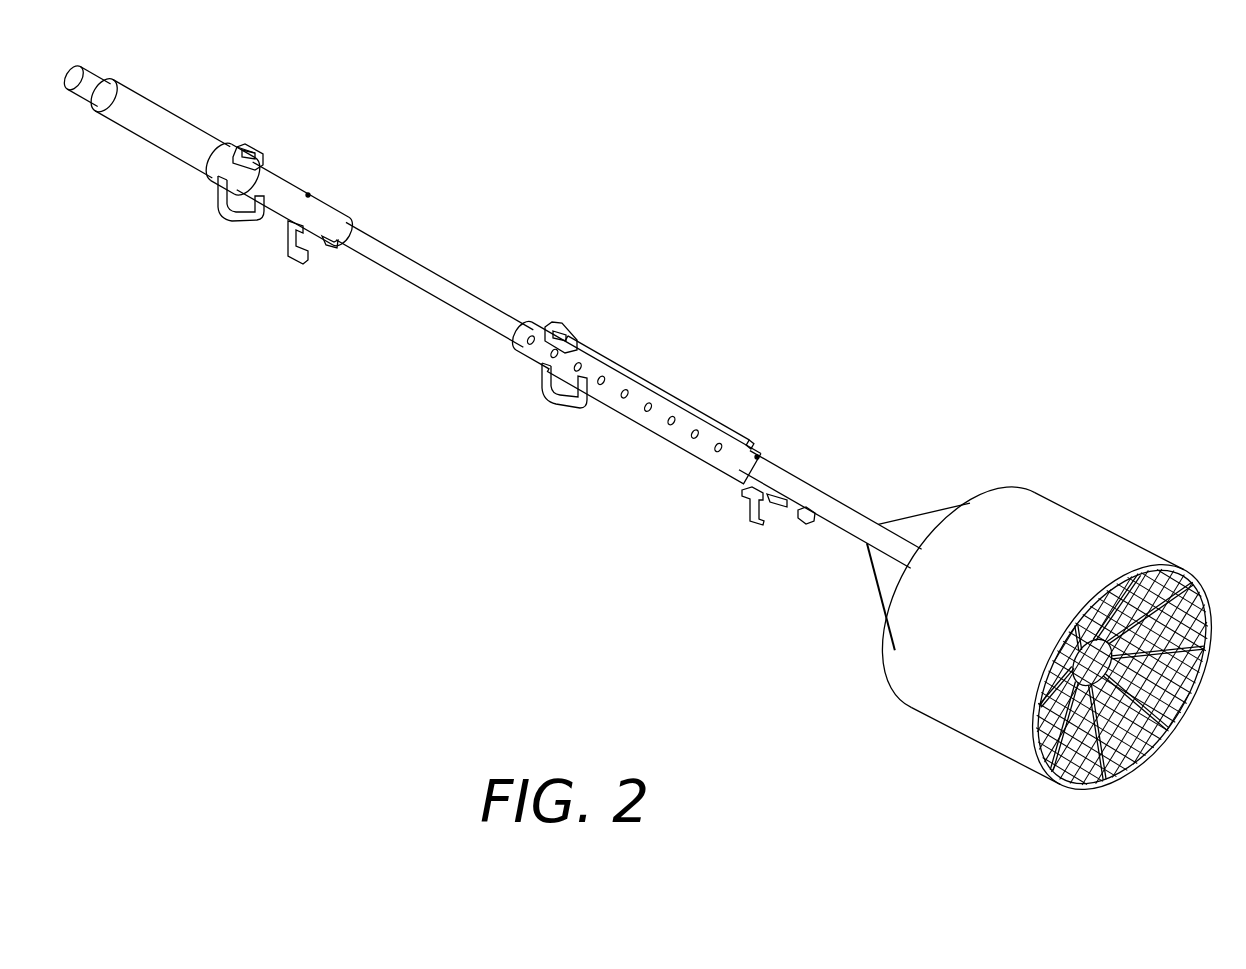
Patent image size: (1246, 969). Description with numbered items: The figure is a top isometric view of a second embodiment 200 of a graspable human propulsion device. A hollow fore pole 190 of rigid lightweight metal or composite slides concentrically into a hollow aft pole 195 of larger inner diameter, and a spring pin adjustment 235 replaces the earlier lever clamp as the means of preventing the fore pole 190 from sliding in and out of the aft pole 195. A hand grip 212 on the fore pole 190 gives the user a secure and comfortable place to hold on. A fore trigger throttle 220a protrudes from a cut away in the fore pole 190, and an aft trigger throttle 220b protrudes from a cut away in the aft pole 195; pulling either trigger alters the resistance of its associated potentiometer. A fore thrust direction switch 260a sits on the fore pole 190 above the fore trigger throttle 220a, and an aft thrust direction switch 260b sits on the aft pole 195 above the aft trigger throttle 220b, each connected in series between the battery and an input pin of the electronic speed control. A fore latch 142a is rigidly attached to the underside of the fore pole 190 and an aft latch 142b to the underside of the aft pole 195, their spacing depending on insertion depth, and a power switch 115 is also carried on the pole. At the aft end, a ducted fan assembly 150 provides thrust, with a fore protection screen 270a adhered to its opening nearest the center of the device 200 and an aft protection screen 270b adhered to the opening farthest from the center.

The embodiment 2 200 is at (865, 263).
The hand grip 212 is at (207, 122).
The fore thrust direction switch 260a is at (260, 160).
The fore trigger throttle 220a is at (222, 210).
The fore pole 190 is at (440, 262).
The fore latch 142a is at (297, 260).
The aft thrust direction switch 260b is at (568, 333).
The spring pin adjustment 235 is at (610, 390).
The aft trigger throttle 220b is at (558, 403).
The aft pole 195 is at (788, 468).
The aft latch 142b is at (742, 515).
The power switch 115 is at (812, 520).
The fore protection screen 270a is at (888, 608).
The aft protection screen 270b is at (1040, 697).
The ducted fan assembly 150 is at (1083, 498).